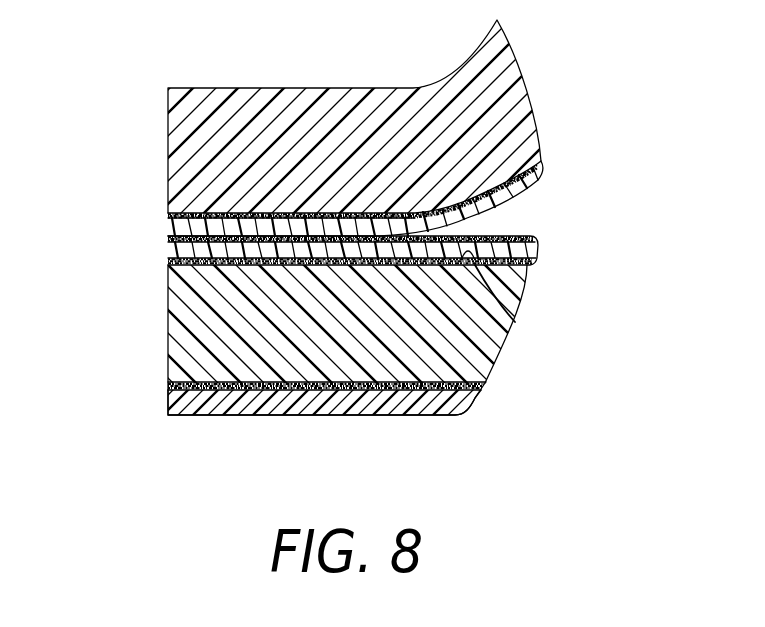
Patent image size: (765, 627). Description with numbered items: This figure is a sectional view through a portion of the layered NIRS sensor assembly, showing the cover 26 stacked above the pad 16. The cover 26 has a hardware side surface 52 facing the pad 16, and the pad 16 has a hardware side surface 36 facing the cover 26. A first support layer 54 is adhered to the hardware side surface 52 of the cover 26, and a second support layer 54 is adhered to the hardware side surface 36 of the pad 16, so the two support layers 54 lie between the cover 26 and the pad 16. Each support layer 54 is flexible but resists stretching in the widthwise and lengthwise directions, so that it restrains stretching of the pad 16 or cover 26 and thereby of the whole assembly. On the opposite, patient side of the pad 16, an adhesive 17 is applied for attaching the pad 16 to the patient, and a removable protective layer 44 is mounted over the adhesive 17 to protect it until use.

The cover 26 is at (163, 86).
The pad 16 is at (163, 288).
The adhesive 17 is at (167, 385).
The removable protective layer 44 is at (325, 415).
The hardware side surface 52 is at (504, 188).
The support layer 54 is at (503, 213).
The hardware side surface 36 is at (515, 322).